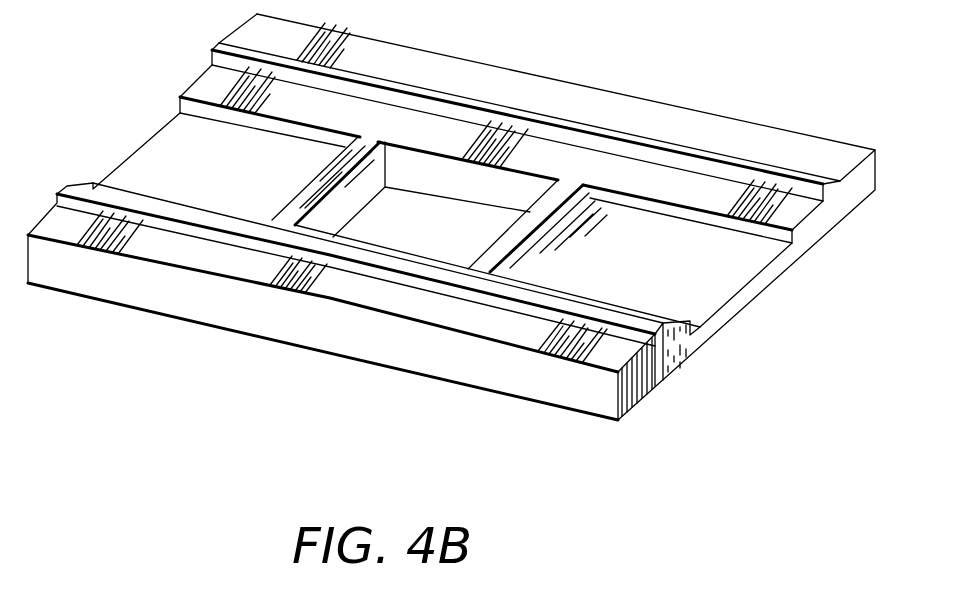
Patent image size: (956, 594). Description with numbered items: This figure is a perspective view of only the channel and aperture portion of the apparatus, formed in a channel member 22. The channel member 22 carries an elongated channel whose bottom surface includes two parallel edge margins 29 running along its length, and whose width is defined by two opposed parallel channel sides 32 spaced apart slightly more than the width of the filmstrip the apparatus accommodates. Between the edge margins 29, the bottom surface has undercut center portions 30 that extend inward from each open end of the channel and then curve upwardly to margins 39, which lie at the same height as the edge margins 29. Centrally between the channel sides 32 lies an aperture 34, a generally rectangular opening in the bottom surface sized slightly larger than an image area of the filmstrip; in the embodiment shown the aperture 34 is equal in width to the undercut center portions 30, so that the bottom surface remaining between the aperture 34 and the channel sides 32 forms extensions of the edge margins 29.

The channel member 22 is at (575, 85).
The edge margins 29 is at (678, 187).
The undercut center portions 30 is at (157, 157).
The channel sides 32 is at (802, 190).
The aperture 34 is at (423, 173).
The margins 39 is at (353, 158).